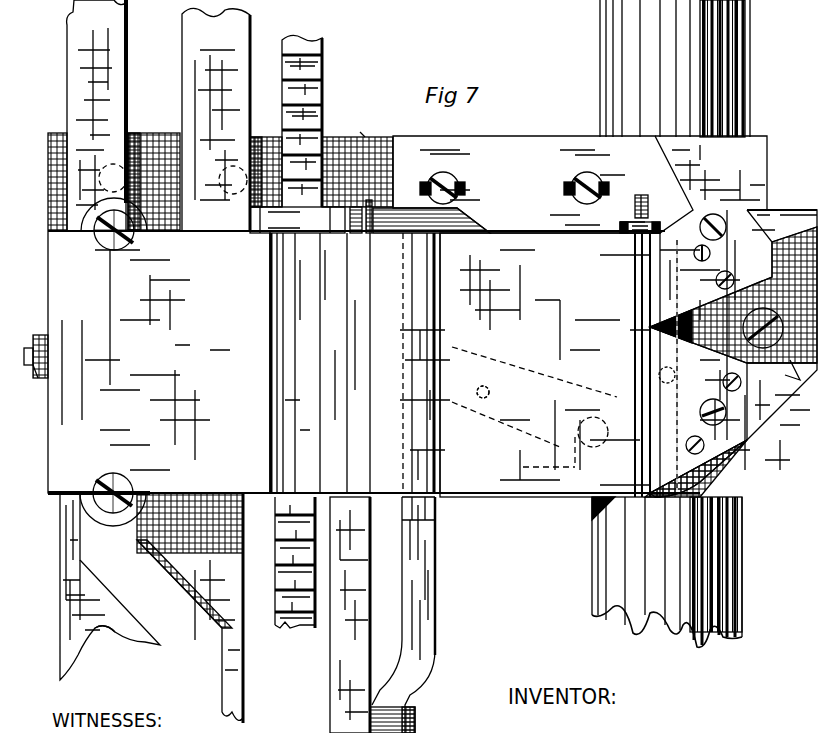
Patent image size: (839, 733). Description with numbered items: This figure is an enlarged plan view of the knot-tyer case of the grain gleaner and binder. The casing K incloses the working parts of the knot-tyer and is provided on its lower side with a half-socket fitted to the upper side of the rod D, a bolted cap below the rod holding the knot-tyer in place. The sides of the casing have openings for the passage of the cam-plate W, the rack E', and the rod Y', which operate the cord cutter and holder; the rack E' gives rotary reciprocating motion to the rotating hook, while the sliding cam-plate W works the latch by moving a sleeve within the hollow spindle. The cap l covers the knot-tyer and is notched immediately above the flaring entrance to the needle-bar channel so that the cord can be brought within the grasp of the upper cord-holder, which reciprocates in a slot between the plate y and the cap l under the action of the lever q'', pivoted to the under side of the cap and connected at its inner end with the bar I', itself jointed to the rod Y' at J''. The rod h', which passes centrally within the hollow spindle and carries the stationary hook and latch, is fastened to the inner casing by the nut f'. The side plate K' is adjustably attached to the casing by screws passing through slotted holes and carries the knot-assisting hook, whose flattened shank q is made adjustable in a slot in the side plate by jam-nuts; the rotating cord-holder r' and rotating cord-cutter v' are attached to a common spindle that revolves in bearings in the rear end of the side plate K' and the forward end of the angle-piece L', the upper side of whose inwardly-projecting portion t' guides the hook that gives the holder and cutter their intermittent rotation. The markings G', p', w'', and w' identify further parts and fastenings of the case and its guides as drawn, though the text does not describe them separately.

The guide boards G' is at (149, 361).
The rack E' is at (298, 331).
The cross bar p' is at (367, 123).
The side plate K' is at (543, 184).
The wedge block w'' is at (431, 212).
The angle-piece L' is at (297, 220).
The inwardly-projecting portion of the angle-piece t' is at (333, 220).
The rotating cord-holder r' is at (352, 230).
The rotating cord-cutter v' is at (372, 227).
The shank of the hook q is at (641, 210).
The screws w' is at (441, 362).
The cap l is at (374, 362).
The rod h' is at (27, 356).
The nut f' is at (30, 386).
The lever q'' is at (493, 391).
The plate y is at (726, 316).
The casing K is at (557, 381).
The rod D is at (678, 323).
The bar I' is at (411, 615).
The joint J'' is at (402, 720).
The rod Y' is at (337, 615).
The cam-plate W is at (107, 649).